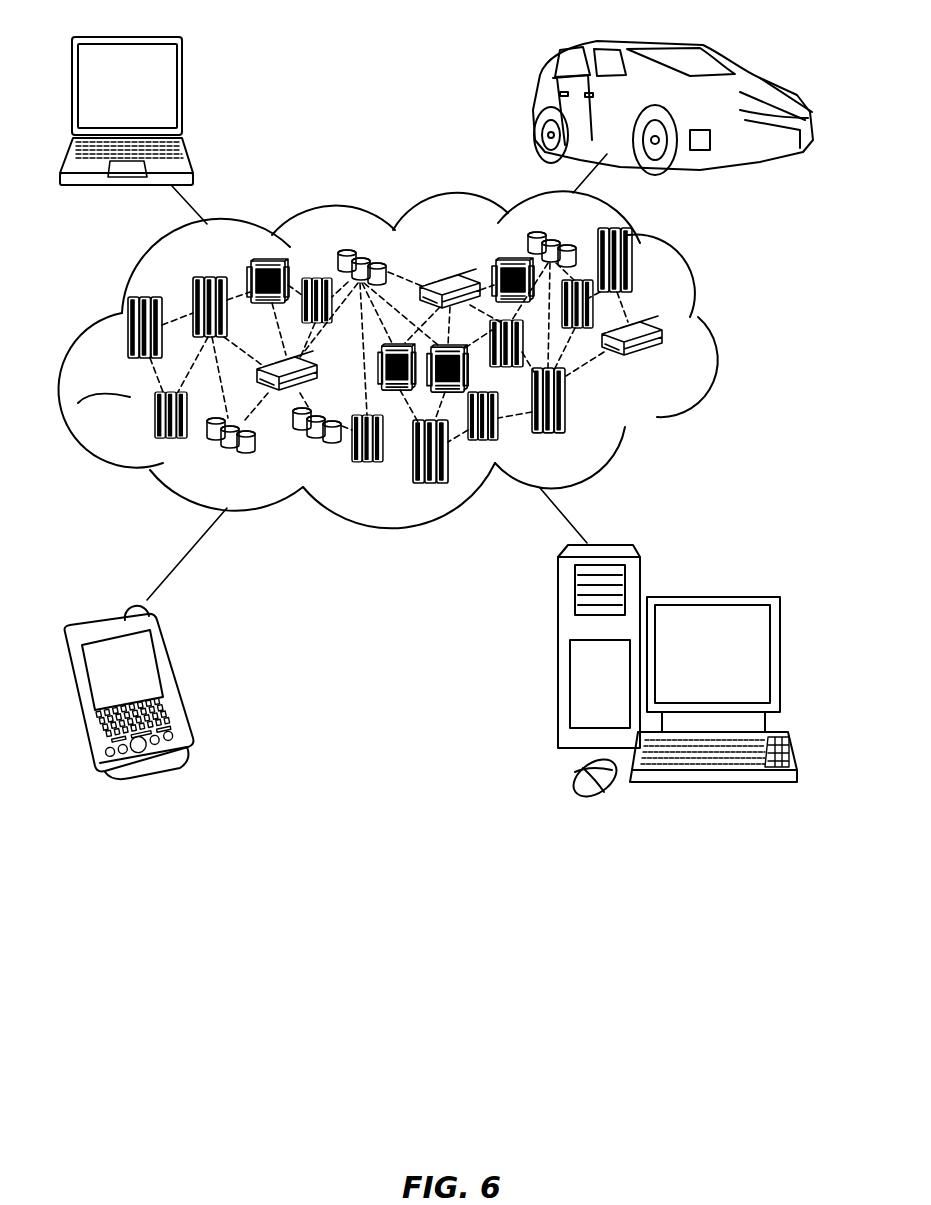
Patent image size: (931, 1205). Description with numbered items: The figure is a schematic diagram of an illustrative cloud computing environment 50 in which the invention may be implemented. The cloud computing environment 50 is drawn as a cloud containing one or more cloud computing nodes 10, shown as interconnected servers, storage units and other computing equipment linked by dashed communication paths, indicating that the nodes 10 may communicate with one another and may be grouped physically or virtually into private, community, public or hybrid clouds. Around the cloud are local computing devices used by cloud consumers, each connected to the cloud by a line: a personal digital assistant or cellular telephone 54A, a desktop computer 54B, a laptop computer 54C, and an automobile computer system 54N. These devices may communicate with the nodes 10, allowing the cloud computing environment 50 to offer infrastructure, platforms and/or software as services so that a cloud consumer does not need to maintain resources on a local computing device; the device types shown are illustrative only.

The cloud computing node 10 is at (664, 366).
The cloud computing environment 50 is at (713, 338).
The personal digital assistant or cellular telephone 54A is at (176, 679).
The desktop computer 54B is at (710, 597).
The laptop computer 54C is at (184, 93).
The automobile computer system 54N is at (538, 107).